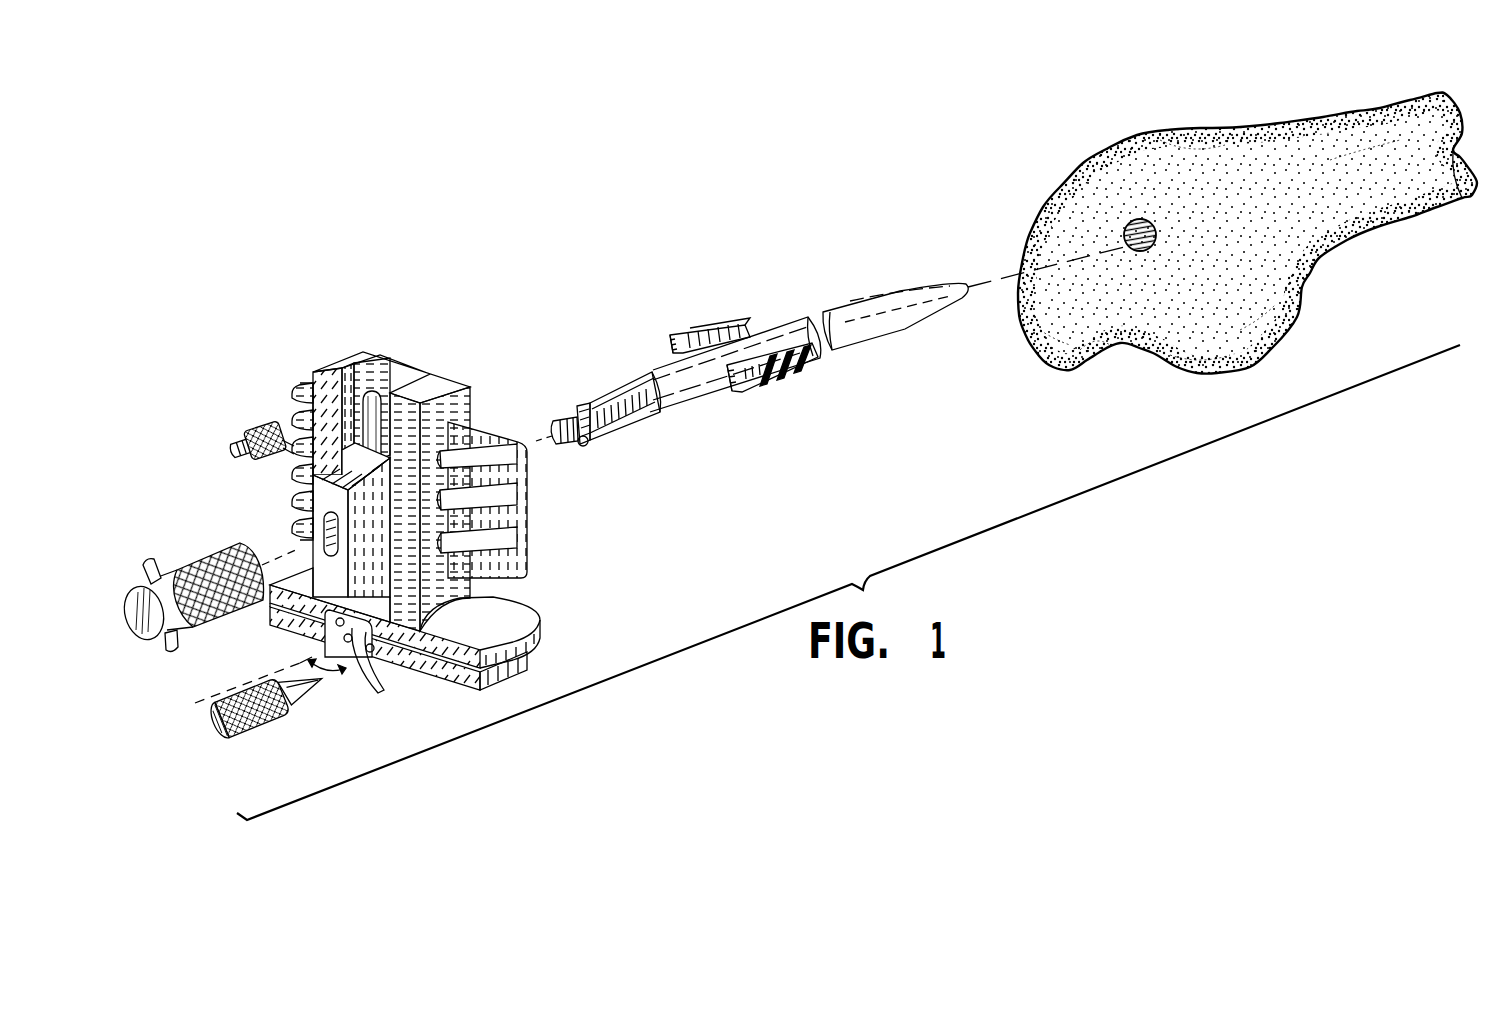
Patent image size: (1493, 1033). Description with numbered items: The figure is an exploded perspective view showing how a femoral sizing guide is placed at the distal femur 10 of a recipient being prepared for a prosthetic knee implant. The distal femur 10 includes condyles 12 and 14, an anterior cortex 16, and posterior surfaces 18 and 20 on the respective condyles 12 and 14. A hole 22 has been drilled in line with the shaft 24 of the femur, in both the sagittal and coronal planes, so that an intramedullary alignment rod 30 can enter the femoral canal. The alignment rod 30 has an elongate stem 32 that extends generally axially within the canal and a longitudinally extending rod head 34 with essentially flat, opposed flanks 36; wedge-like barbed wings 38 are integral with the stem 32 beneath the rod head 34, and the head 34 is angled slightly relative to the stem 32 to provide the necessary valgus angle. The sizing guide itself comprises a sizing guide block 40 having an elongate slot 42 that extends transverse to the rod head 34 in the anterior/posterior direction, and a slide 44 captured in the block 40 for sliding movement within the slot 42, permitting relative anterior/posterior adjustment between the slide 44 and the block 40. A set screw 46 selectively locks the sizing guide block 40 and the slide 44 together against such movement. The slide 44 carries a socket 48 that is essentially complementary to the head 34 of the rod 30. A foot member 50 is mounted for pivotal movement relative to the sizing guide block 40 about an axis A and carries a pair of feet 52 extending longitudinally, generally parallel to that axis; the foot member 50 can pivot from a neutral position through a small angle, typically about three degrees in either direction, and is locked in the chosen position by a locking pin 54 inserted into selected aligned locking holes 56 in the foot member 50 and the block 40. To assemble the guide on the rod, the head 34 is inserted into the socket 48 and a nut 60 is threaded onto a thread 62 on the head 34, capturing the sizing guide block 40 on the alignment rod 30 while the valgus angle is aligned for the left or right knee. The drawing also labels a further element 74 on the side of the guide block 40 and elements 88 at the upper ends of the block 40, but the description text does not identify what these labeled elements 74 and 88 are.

The distal femur 10 is at (1242, 118).
The condyle 12 is at (1067, 337).
The condyle 14 is at (1258, 322).
The anterior cortex 16 is at (1197, 142).
The posterior surface 18 is at (1087, 360).
The posterior surface 20 is at (1205, 378).
The hole 22 is at (1124, 233).
The shaft 24 is at (1340, 135).
The intramedullary alignment rod 30 is at (795, 314).
The stem 32 is at (895, 297).
The rod head 34 is at (640, 420).
The flanks 36 is at (577, 410).
The barbed wings 38 is at (725, 330).
The sizing guide block 40 is at (395, 511).
The elongate slot 42 is at (373, 391).
The slide 44 is at (325, 499).
The set screw 46 is at (262, 432).
The socket 48 is at (300, 548).
The foot member 50 is at (407, 670).
The feet 52 is at (270, 627).
The locking pin 54 is at (300, 690).
The locking holes 56 is at (366, 681).
The nut 60 is at (130, 598).
The thread 62 is at (573, 445).
The guide member 74 is at (448, 548).
The guide plates 88 is at (360, 352).